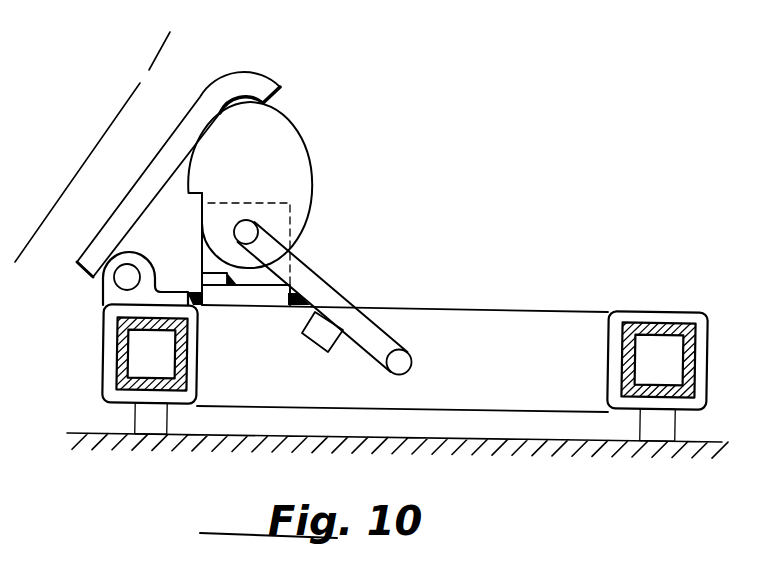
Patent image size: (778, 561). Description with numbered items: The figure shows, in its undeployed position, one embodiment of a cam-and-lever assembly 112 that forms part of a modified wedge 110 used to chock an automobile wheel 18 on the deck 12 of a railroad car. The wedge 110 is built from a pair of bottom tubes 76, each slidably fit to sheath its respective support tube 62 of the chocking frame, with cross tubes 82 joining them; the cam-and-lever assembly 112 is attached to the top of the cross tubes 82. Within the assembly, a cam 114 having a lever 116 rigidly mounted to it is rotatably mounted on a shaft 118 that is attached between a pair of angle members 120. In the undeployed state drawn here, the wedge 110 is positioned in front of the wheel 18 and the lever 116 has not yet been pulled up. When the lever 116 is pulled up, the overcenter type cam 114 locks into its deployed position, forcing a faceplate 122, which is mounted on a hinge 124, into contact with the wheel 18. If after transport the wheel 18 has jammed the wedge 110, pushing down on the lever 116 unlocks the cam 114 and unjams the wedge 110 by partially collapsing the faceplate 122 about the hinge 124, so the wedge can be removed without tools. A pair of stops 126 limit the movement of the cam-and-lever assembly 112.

The deck 12 is at (697, 441).
The wheel 18 is at (75, 140).
The support tube 62 is at (123, 350).
The bottom tube 76 is at (110, 393).
The cross tube 82 is at (517, 323).
The wedge 110 is at (373, 98).
The cam-and-lever assembly 112 is at (346, 244).
The cam 114 is at (292, 148).
The lever 116 is at (380, 342).
The shaft 118 is at (243, 224).
The angle member 120 is at (208, 260).
The faceplate 122 is at (260, 85).
The hinge 124 is at (108, 283).
The stop 126 is at (313, 323).